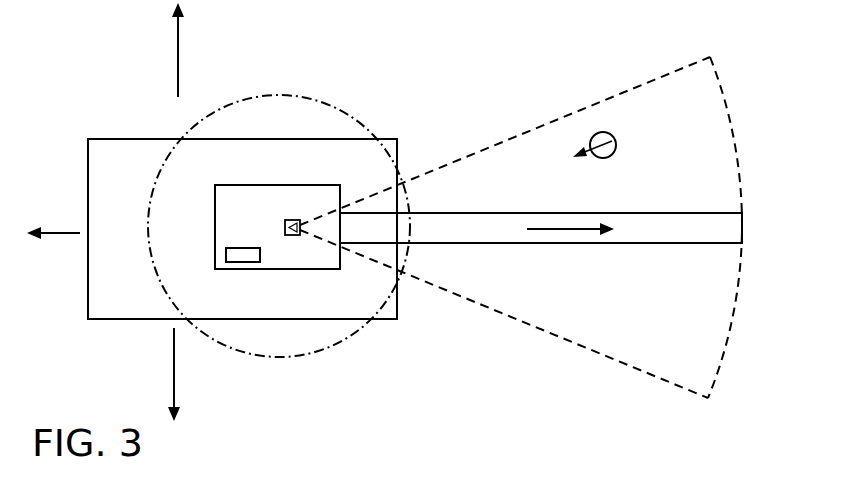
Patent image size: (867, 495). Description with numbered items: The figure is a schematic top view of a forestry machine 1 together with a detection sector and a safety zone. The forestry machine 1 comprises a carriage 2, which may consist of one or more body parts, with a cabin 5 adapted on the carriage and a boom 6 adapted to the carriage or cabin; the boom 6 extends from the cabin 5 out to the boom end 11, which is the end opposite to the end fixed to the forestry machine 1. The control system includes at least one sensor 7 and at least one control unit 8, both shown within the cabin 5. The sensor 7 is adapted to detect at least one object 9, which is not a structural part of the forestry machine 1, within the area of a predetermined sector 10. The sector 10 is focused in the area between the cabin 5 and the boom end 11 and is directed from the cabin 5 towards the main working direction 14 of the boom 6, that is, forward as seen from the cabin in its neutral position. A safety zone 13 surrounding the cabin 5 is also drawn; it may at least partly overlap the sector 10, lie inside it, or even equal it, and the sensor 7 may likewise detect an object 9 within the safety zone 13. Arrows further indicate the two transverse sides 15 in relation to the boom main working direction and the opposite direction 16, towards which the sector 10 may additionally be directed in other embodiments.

The forestry machine 1 is at (74, 150).
The carriage 2 is at (142, 155).
The cabin 5 is at (262, 197).
The boom 6 is at (473, 225).
The sensor 7 is at (290, 220).
The control unit 8 is at (248, 255).
The object 9 is at (612, 143).
The predetermined sector 10 is at (708, 152).
The boom end 11 is at (755, 228).
The safety zone 13 is at (307, 120).
The main working direction 14 is at (570, 243).
The transverse sides 15 is at (158, 212).
The opposite direction 16 is at (53, 252).